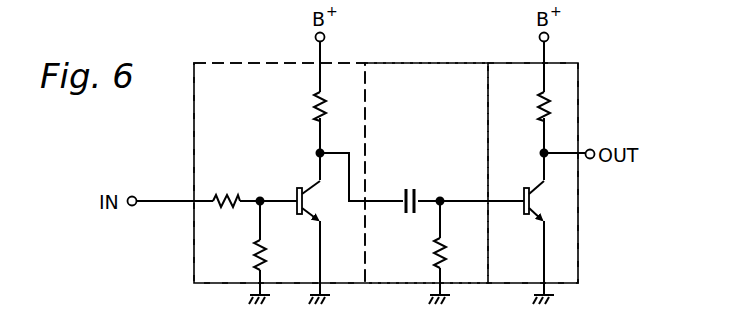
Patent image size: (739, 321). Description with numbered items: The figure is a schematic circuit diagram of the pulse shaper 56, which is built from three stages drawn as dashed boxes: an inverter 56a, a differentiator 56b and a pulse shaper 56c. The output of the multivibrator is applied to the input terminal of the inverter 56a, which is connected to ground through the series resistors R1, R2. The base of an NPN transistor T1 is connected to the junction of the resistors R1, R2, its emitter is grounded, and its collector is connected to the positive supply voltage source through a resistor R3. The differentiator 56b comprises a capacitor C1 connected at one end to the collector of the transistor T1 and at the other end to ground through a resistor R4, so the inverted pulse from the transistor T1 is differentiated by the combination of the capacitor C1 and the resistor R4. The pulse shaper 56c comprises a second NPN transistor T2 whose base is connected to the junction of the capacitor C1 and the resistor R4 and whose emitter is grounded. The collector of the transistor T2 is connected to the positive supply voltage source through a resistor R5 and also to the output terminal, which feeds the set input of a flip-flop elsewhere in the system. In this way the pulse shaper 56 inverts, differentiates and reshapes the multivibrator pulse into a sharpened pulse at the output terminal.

The pulse shaper 56 is at (467, 41).
The inverter 56a is at (234, 63).
The differentiator 56b is at (421, 63).
The pulse shaper 56c is at (562, 63).
The resistor R1 is at (227, 187).
The resistor R2 is at (242, 252).
The resistor R3 is at (300, 108).
The resistor R4 is at (424, 252).
The resistor R5 is at (525, 106).
The capacitor C1 is at (415, 188).
The NPN transistor T1 is at (308, 242).
The NPN transistor T2 is at (533, 242).